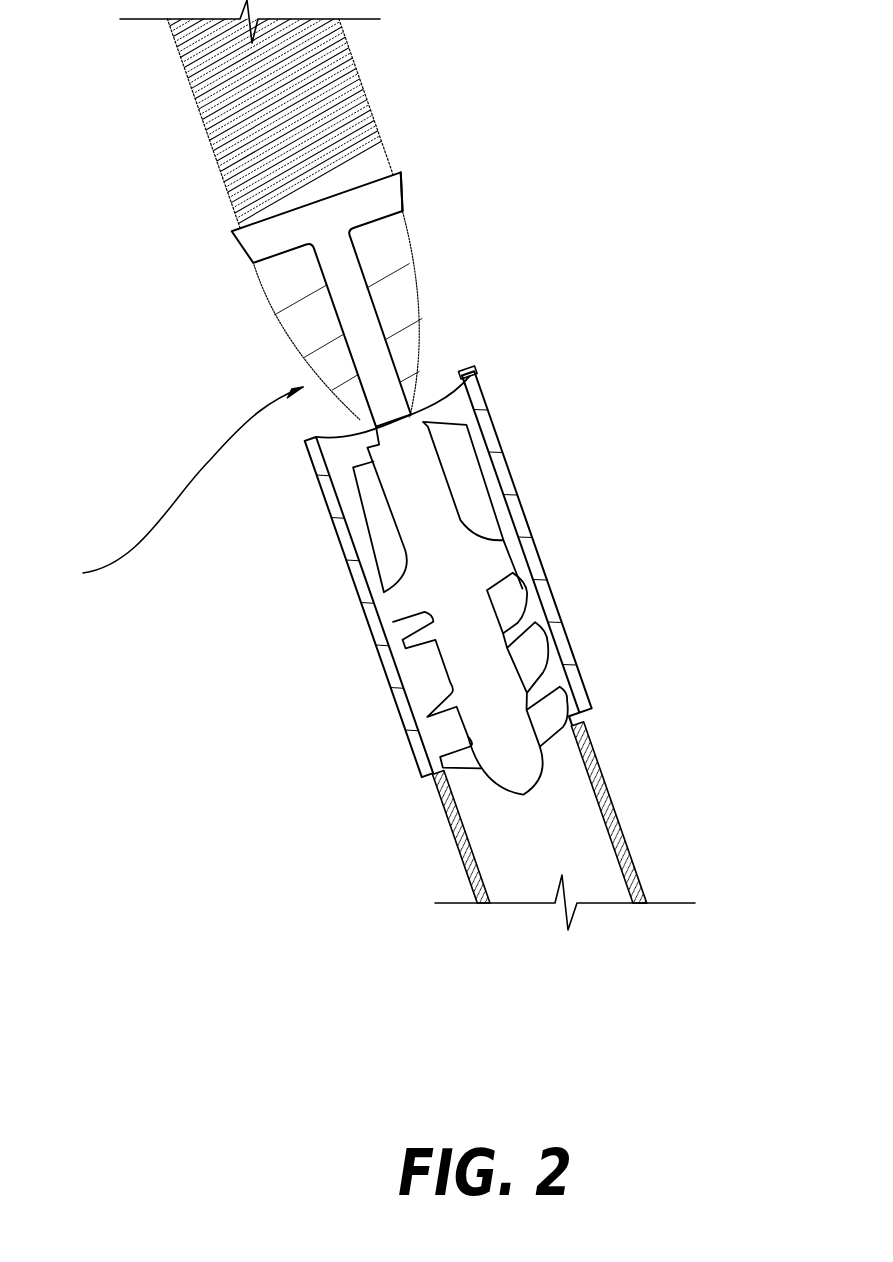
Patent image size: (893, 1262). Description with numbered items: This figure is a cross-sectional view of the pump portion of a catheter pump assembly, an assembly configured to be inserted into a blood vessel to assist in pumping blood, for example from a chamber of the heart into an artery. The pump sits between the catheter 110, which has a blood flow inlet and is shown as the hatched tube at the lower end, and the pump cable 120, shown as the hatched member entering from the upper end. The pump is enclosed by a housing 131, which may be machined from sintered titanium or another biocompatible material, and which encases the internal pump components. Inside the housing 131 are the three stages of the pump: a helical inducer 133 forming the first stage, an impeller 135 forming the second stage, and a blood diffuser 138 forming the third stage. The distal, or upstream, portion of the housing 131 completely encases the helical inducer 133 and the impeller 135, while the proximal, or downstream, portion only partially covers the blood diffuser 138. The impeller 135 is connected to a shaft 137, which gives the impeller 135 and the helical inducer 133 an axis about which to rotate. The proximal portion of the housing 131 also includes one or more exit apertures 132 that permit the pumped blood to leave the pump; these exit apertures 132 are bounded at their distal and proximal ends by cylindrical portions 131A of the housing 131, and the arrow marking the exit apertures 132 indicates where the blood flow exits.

The catheter 110 is at (590, 825).
The pump cable 120 is at (235, 122).
The housing 131 is at (507, 487).
The cylindrical portions 131A is at (383, 200).
The exit apertures 132 is at (177, 489).
The helical inducer 133 is at (493, 700).
The impeller 135 is at (382, 528).
The shaft 137 is at (380, 323).
The blood diffuser 138 is at (297, 337).